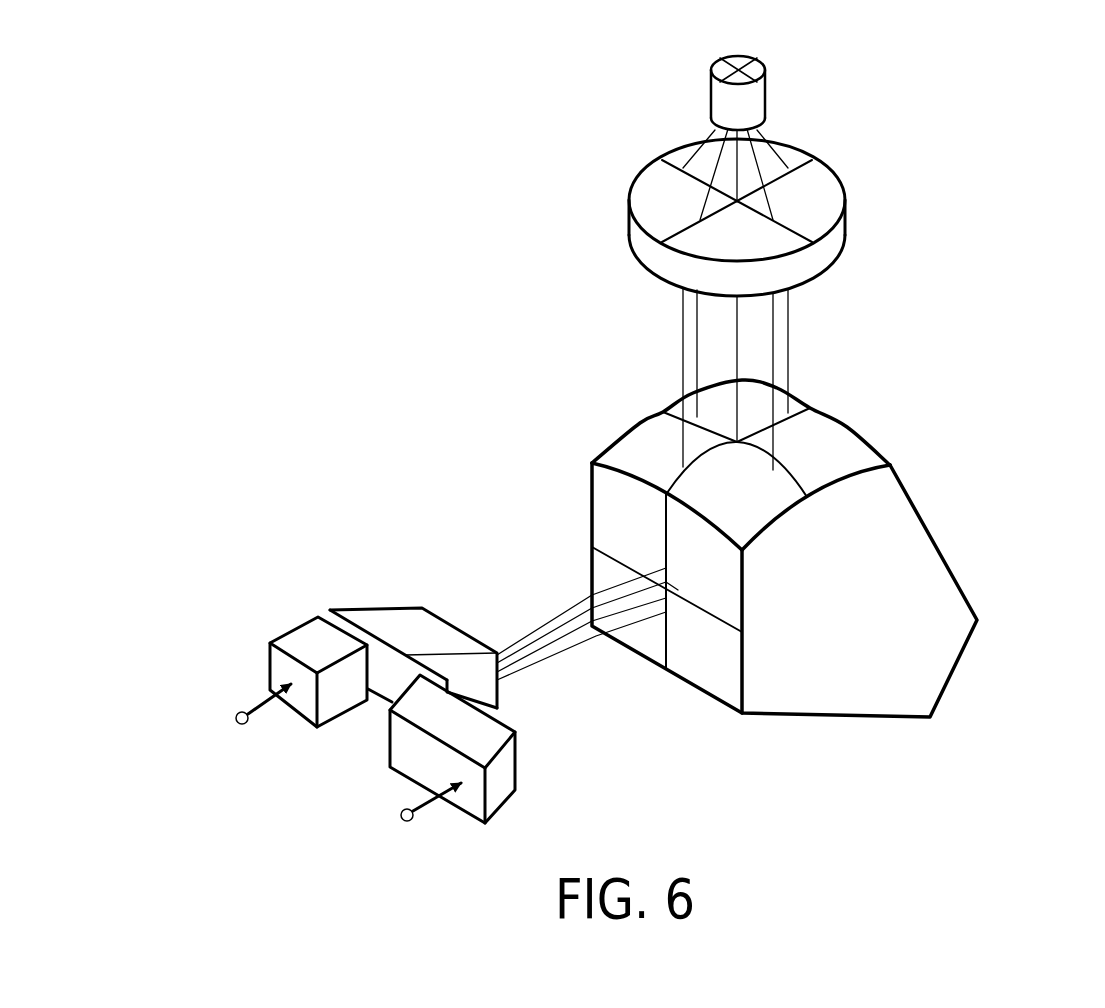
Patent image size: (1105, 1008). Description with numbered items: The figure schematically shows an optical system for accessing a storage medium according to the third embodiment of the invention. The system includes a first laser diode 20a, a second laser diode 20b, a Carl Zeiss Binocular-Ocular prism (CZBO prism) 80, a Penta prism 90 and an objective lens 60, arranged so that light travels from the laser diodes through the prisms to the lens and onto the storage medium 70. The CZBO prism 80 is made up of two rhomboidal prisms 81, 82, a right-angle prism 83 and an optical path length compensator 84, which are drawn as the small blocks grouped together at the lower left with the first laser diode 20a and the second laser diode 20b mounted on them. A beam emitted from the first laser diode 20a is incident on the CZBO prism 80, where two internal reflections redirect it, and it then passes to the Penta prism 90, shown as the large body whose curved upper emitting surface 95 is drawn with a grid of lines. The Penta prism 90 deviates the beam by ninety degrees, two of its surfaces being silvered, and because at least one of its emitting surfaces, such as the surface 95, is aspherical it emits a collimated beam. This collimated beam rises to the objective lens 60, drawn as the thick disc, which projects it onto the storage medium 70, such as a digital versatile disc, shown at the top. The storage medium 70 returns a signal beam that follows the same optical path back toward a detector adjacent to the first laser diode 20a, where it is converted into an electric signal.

The storage medium 70 is at (753, 70).
The objective lens 60 is at (825, 193).
The lens surface 95 is at (645, 442).
The Penta prism 90 is at (826, 548).
The Carl Zeiss Binocular-Ocular prism 80 is at (315, 607).
The rhomboidal prism 82 is at (397, 613).
The OPL compensator 84 is at (298, 643).
The rhomboidal prism 81 is at (402, 748).
The right-angle prism 83 is at (483, 688).
The first laser diode 20a is at (402, 810).
The second laser diode 20b is at (237, 712).